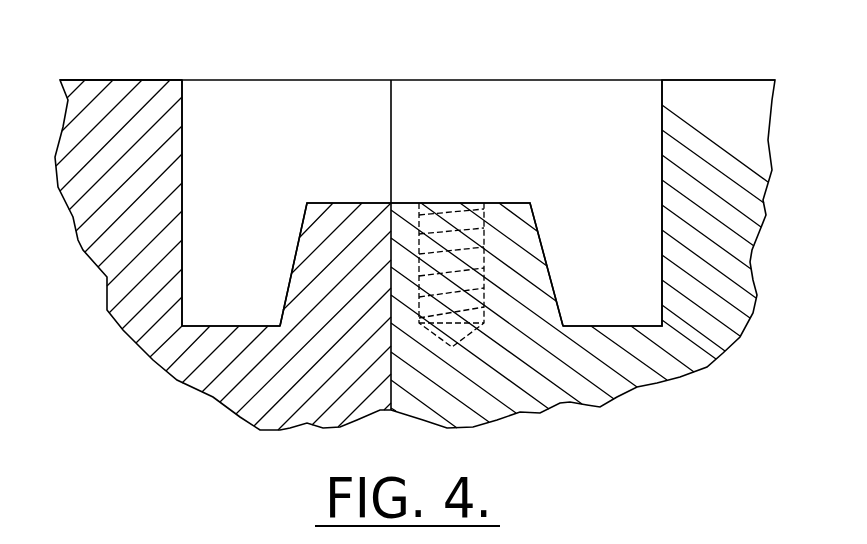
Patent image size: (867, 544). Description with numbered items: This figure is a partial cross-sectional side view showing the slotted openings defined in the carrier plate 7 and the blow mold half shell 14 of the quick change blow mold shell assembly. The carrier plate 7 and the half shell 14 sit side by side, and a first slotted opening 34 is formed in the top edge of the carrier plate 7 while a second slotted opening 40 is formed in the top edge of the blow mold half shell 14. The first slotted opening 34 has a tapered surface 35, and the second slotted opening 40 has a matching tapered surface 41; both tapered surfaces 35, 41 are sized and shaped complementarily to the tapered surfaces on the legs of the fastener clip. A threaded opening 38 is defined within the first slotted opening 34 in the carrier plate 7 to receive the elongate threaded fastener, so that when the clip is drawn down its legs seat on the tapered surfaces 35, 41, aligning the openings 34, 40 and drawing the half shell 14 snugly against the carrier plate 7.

The carrier plate 7 is at (748, 80).
The blow mold half shell 14 is at (108, 80).
The second slotted opening 40 is at (218, 106).
The first slotted opening 34 is at (562, 103).
The tapered surface 41 is at (293, 265).
The tapered surface 35 is at (545, 258).
The threaded opening 38 is at (447, 202).